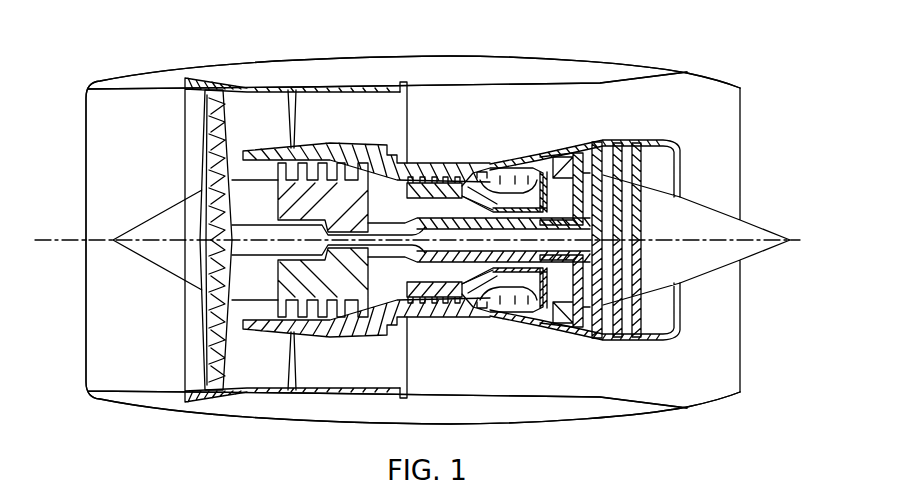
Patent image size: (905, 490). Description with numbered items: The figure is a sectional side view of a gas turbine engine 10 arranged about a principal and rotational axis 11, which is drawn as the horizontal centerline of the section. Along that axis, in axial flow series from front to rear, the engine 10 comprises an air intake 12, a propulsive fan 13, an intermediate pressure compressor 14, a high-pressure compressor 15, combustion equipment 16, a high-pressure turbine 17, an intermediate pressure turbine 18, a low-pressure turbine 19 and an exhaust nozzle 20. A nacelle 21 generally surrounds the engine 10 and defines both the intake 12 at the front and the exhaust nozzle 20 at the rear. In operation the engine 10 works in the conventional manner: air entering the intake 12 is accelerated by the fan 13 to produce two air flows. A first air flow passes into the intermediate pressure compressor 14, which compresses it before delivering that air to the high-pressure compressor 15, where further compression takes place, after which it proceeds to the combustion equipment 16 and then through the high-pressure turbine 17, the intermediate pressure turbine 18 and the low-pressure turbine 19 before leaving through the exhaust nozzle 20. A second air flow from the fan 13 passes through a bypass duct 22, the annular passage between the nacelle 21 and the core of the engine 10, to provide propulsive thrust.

The gas turbine engine 10 is at (81, 101).
The principal and rotational axis 11 is at (72, 240).
The air intake 12 is at (160, 88).
The propulsive fan 13 is at (202, 360).
The intermediate pressure compressor 14 is at (312, 283).
The high-pressure compressor 15 is at (435, 181).
The combustion equipment 16 is at (500, 303).
The high-pressure turbine 17 is at (540, 312).
The intermediate pressure turbine 18 is at (572, 152).
The low-pressure turbine 19 is at (597, 335).
The exhaust nozzle 20 is at (740, 368).
The nacelle 21 is at (447, 72).
The bypass duct 22 is at (379, 125).